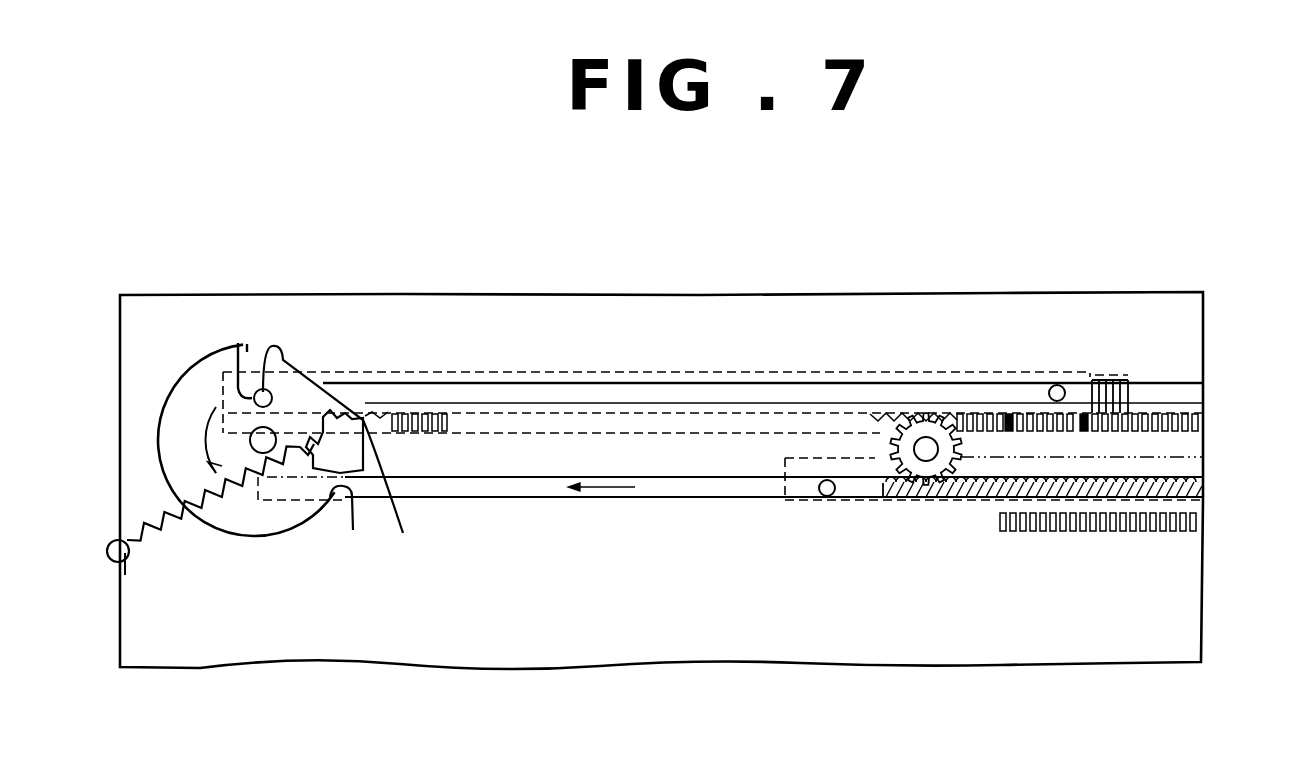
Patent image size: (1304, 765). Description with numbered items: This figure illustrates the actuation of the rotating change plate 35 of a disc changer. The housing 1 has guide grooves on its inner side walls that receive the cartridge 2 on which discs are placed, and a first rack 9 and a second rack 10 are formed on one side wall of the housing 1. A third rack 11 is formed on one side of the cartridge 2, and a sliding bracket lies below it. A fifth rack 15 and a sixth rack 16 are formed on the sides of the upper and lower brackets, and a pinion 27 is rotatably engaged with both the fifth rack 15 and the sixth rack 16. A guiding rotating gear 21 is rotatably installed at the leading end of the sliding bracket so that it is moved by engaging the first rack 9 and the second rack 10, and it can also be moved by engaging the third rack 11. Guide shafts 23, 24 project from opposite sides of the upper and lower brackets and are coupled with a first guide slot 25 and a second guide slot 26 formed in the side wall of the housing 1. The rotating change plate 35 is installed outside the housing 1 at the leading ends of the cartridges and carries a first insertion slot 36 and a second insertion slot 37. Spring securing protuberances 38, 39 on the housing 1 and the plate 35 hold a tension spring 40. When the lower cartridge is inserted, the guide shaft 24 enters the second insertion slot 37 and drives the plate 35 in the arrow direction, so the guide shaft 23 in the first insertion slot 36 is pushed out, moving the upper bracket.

The housing 1 is at (955, 312).
The cartridge 2 is at (580, 395).
The first rack 9 is at (1200, 412).
The second rack 10 is at (1168, 534).
The third rack 11 is at (437, 400).
The fifth rack 15 is at (880, 420).
The sixth rack 16 is at (994, 478).
The guiding rotating gear 21 is at (1013, 415).
The guide shaft 23 is at (270, 391).
The guide shaft 24 is at (822, 502).
The first guide slot 25 is at (670, 390).
The second guide slot 26 is at (692, 494).
The pinion 27 is at (913, 480).
The rotating change plate 35 is at (279, 528).
The first insertion slot 36 is at (240, 395).
The second insertion slot 37 is at (344, 504).
The spring securing protuberance 38 is at (348, 459).
The spring securing protuberance 39 is at (118, 563).
The tension spring 40 is at (164, 524).